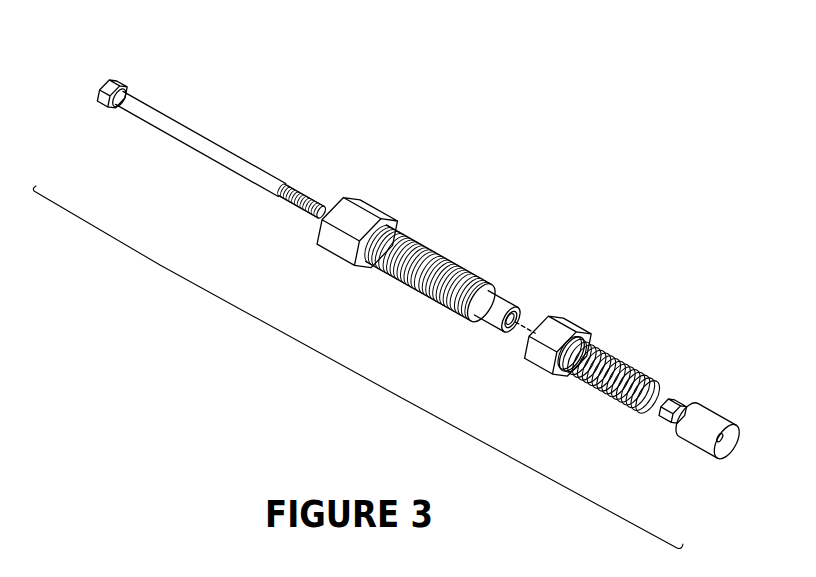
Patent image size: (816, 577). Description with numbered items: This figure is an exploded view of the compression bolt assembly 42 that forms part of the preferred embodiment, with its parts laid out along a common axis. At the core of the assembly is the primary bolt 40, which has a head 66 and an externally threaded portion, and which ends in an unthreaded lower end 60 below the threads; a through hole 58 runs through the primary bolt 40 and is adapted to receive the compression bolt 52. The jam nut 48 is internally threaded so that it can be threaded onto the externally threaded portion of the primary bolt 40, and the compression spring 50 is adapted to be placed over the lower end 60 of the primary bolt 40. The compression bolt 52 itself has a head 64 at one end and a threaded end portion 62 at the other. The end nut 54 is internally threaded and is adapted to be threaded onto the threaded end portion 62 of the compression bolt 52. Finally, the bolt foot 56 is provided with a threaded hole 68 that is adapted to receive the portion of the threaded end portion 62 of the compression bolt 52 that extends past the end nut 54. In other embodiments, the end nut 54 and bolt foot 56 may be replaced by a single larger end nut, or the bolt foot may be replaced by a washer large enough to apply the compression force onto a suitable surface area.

The primary bolt 40 is at (411, 240).
The compression bolt assembly 42 is at (358, 367).
The jam nut 48 is at (550, 322).
The compression spring 50 is at (615, 365).
The compression bolt 52 is at (207, 142).
The end nut 54 is at (660, 416).
The bolt foot 56 is at (726, 418).
The through hole 58 is at (513, 325).
The lower end 60 is at (496, 330).
The threaded end portion 62 is at (313, 187).
The head 64 is at (123, 75).
The head 66 is at (371, 205).
The threaded hole 68 is at (731, 438).